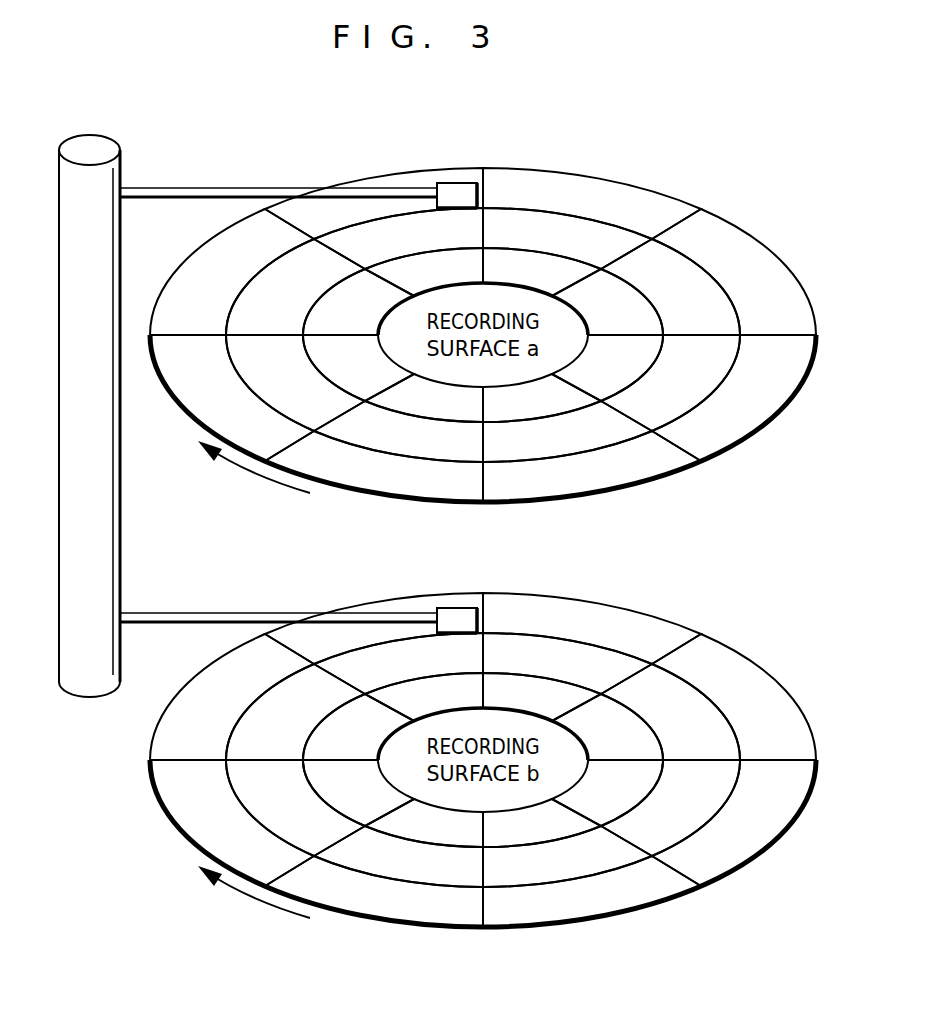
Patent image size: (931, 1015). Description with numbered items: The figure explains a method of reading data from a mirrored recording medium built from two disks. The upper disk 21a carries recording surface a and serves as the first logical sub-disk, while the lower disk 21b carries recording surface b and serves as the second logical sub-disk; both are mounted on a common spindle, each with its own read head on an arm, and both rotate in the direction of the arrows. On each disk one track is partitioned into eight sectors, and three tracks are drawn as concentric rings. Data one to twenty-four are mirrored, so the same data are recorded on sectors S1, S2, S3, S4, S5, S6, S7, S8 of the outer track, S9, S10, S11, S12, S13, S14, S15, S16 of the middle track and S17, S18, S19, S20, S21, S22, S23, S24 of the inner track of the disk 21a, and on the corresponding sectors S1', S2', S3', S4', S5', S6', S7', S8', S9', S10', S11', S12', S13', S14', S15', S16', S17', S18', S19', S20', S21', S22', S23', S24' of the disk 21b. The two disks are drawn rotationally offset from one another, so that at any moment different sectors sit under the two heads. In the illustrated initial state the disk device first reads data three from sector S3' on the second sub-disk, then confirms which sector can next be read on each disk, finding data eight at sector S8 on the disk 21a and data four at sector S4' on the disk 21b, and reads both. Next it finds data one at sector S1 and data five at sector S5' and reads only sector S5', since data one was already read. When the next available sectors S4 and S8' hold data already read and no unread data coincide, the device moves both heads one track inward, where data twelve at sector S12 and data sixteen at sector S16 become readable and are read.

The disk 21a is at (342, 182).
The disk 21b is at (342, 607).
The sector S1 is at (374, 466).
The sector S2 is at (592, 466).
The sector S3 is at (734, 398).
The sector S4 is at (734, 272).
The sector S5 is at (592, 203).
The sector S6 is at (374, 191).
The sector S7 is at (232, 272).
The sector S8 is at (232, 398).
The sector S9 is at (398, 431).
The sector S10 is at (567, 431).
The sector S11 is at (670, 383).
The sector S12 is at (670, 287).
The sector S13 is at (567, 238).
The sector S14 is at (398, 238).
The sector S15 is at (295, 287).
The sector S16 is at (295, 383).
The sector S17 is at (424, 398).
The sector S18 is at (542, 398).
The sector S19 is at (607, 368).
The sector S20 is at (607, 302).
The sector S21 is at (542, 272).
The sector S22 is at (424, 272).
The sector S23 is at (358, 302).
The sector S24 is at (358, 368).
The sector S1' is at (592, 628).
The sector S2' is at (374, 616).
The sector S3' is at (232, 697).
The sector S4' is at (232, 823).
The sector S5' is at (374, 891).
The sector S6' is at (592, 891).
The sector S7' is at (734, 823).
The sector S8' is at (734, 697).
The sector S9' is at (567, 663).
The sector S10' is at (398, 663).
The sector S11' is at (295, 712).
The sector S12' is at (295, 808).
The sector S13' is at (398, 856).
The sector S14' is at (567, 856).
The sector S15' is at (670, 808).
The sector S16' is at (670, 712).
The sector S17' is at (542, 697).
The sector S18' is at (424, 697).
The sector S19' is at (358, 727).
The sector S20' is at (358, 793).
The sector S21' is at (424, 823).
The sector S22' is at (542, 823).
The sector S23' is at (607, 793).
The sector S24' is at (607, 727).